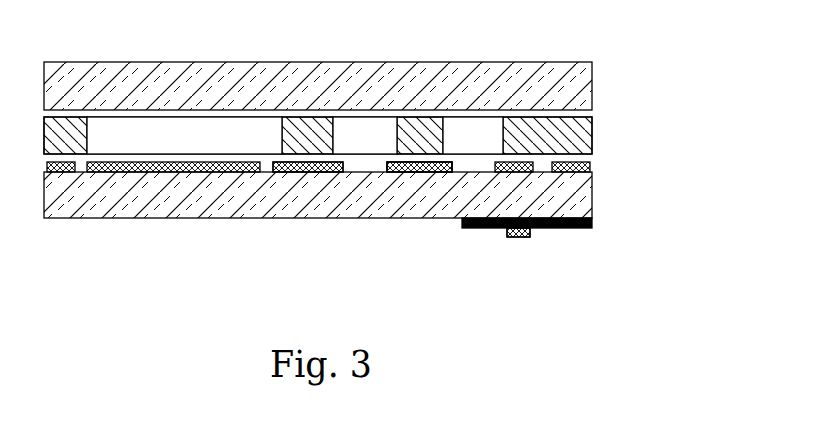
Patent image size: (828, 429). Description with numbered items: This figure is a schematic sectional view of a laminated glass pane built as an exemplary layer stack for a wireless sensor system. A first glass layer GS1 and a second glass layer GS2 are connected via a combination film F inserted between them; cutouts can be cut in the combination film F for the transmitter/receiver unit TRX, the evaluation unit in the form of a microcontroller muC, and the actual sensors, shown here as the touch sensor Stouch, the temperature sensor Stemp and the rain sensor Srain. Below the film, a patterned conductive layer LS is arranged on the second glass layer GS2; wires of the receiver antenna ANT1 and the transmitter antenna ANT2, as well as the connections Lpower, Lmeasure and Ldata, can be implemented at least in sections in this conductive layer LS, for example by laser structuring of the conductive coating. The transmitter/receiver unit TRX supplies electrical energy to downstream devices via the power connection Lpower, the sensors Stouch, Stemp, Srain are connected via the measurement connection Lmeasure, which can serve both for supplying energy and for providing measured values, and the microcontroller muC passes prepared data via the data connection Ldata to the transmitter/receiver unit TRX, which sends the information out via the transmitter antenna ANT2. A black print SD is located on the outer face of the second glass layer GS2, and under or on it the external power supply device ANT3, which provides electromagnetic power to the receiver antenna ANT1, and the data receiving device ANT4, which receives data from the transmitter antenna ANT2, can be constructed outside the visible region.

The first glass layer GS1 is at (606, 85).
The second glass layer GS2 is at (606, 205).
The combination film F is at (606, 135).
The conductive layer LS is at (606, 167).
The black print SD is at (608, 230).
The receiver antenna ANT1 is at (63, 150).
The transmitter antenna ANT2 is at (517, 150).
The power supply device ANT3 is at (518, 249).
The data receiving device ANT4 is at (518, 232).
The touch sensor Stouch is at (184, 135).
The temperature sensor Stemp is at (192, 137).
The rain sensor Srain is at (251, 137).
The microcontroller muC is at (365, 135).
The transmitter/receiver unit TRX is at (473, 135).
The measurement connection Lmeasure is at (290, 182).
The power connection Lpower is at (397, 182).
The data connection Ldata is at (419, 219).